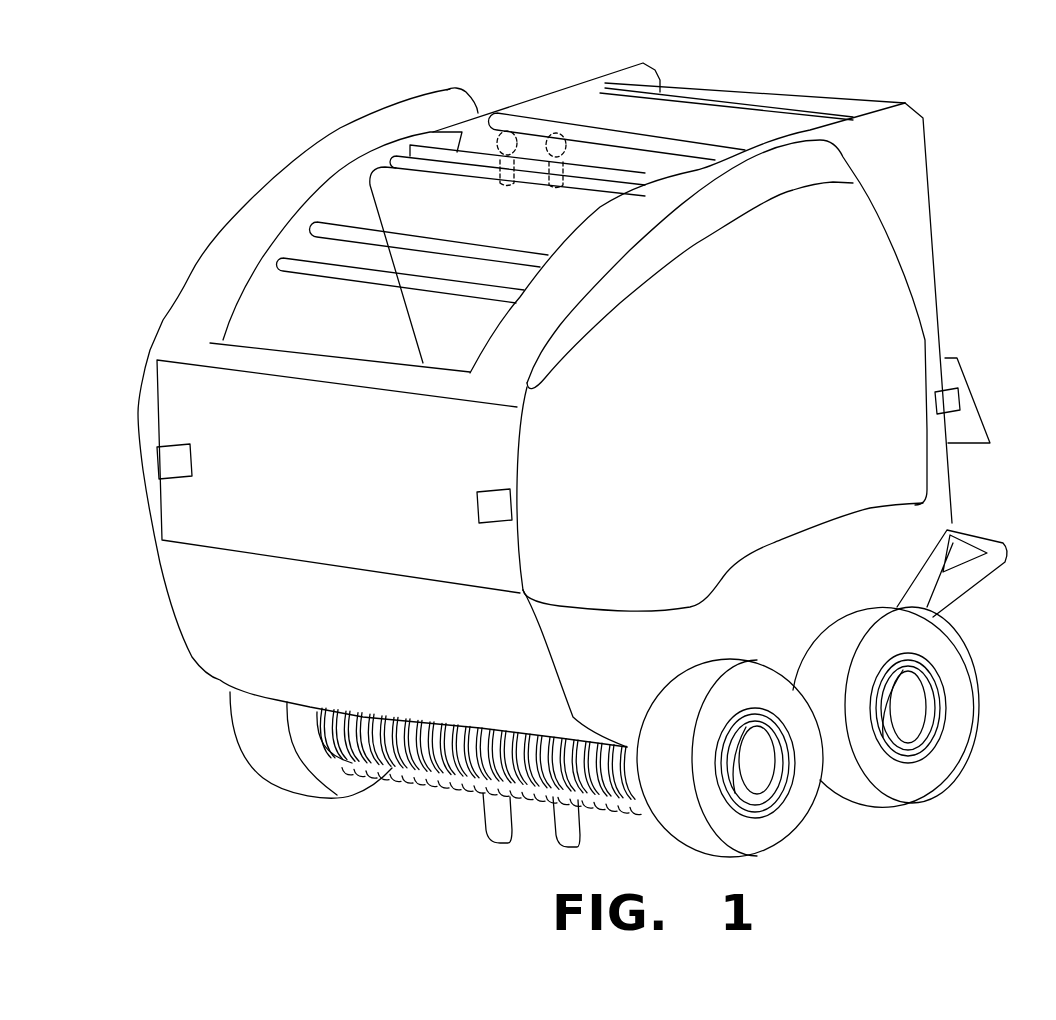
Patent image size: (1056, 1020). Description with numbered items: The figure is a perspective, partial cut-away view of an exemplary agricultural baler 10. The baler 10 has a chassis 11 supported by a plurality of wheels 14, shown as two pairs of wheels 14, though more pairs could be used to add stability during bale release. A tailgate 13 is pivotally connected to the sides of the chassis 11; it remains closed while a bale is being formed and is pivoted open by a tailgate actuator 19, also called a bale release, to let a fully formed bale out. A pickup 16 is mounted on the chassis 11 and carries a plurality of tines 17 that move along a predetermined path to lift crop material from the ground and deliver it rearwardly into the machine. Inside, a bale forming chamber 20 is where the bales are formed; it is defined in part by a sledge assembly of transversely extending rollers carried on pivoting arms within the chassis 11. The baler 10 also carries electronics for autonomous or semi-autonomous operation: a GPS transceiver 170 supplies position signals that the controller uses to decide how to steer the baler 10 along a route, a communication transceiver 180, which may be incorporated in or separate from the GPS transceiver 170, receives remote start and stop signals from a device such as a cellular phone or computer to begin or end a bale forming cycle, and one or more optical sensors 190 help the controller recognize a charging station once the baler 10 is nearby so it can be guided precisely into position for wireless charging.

The agricultural baler 10 is at (756, 78).
The chassis 11 is at (867, 535).
The tailgate 13 is at (963, 346).
The wheels 14 is at (243, 752).
The pickup 16 is at (417, 800).
The tines 17 is at (531, 826).
The tailgate actuator 19 is at (962, 398).
The bale forming chamber 20 is at (356, 201).
The GPS transceiver 170 is at (492, 144).
The communication transceiver 180 is at (547, 134).
The optical sensors 190 is at (178, 445).